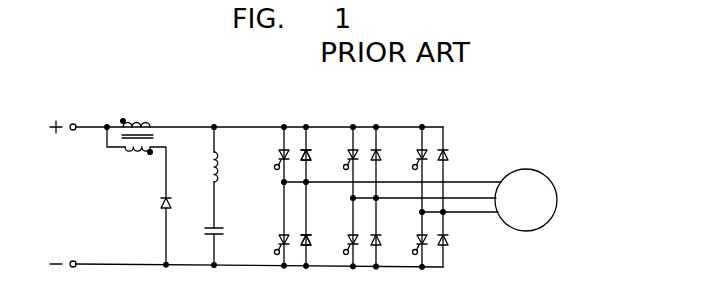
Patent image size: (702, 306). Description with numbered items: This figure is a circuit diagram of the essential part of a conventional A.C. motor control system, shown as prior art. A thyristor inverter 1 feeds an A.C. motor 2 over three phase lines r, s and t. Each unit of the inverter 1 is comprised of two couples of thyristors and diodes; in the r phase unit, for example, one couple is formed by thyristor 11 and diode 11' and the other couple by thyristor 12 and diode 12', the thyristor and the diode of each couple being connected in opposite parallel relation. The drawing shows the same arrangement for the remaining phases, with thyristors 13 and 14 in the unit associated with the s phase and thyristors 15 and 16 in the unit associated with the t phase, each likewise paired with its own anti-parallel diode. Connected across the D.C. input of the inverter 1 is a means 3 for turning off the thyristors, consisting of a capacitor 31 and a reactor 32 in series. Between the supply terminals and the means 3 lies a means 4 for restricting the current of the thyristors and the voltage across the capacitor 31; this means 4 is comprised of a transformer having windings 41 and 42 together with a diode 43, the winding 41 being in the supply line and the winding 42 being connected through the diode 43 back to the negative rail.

The thyristor inverter 1 is at (367, 113).
The A.C. motor 2 is at (556, 212).
The means for turning off the thyristors 3 is at (217, 111).
The means for restricting a current of the thyristors and a voltage across the capac 4 is at (123, 81).
The thyristor 11 is at (272, 135).
The diode 11' is at (320, 143).
The thyristor 12 is at (266, 235).
The diode 12' is at (294, 269).
The thyristor 13 is at (343, 165).
The thyristor 14 is at (345, 240).
The thyristor 15 is at (415, 168).
The thyristor 16 is at (415, 240).
The capacitor 31 is at (203, 230).
The reactor 32 is at (229, 163).
The winding 41 is at (140, 120).
The winding 42 is at (143, 152).
The diode 43 is at (158, 203).
The r phase r is at (282, 182).
The s phase s is at (353, 198).
The t phase t is at (418, 212).